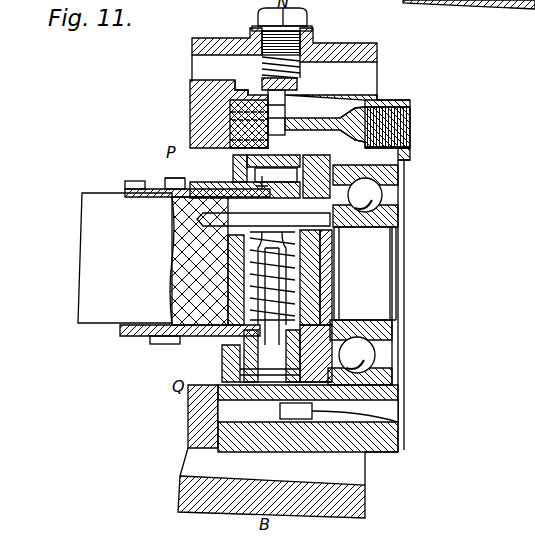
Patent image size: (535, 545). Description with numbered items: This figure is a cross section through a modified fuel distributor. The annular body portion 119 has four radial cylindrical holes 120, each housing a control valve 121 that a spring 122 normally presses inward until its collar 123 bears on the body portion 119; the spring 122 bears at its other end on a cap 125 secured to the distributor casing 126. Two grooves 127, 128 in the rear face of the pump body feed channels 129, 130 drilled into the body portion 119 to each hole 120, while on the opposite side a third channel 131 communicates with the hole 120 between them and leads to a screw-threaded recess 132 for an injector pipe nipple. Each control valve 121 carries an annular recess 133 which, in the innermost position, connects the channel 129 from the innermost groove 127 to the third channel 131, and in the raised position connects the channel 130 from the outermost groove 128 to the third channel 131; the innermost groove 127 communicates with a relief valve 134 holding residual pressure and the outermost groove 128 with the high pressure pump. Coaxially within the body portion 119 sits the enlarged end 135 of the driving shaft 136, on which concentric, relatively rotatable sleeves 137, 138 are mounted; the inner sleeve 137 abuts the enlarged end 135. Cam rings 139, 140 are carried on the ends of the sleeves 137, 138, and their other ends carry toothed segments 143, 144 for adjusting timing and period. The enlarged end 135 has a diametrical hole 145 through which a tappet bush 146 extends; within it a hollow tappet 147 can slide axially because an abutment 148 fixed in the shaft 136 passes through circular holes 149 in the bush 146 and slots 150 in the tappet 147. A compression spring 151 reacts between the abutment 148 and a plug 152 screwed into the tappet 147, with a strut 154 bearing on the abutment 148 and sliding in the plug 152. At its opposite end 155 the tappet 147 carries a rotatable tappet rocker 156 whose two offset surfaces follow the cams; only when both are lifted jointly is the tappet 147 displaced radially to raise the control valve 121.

The annular body portion 119 is at (402, 135).
The cylindrical hole 120 is at (410, 6).
The control valve 121 is at (252, 45).
The spring 122 is at (292, 62).
The collar 123 is at (286, 100).
The cap 125 is at (262, 16).
The distributor casing 126 is at (366, 500).
The groove 127 is at (232, 128).
The groove 128 is at (232, 102).
The channel 129 is at (232, 134).
The channel 130 is at (232, 92).
The third channel 131 is at (412, 165).
The screw-threaded recess 132 is at (410, 122).
The annular recess 133 is at (370, 101).
The relief valve 134 is at (398, 432).
The enlarged end 135 is at (345, 300).
The driving shaft 136 is at (100, 282).
The inner sleeve 137 is at (125, 190).
The outer sleeve 138 is at (165, 184).
The cam ring 139 is at (300, 190).
The cam ring 140 is at (240, 175).
The toothed segment 143 is at (135, 197).
The toothed segment 144 is at (165, 180).
The diametrical hole 145 is at (345, 345).
The tappet bush 146 is at (398, 310).
The tappet 147 is at (396, 335).
The abutment 148 is at (345, 235).
The circular hole 149 is at (370, 255).
The slot 150 is at (160, 338).
The compression spring 151 is at (176, 348).
The plug 152 is at (200, 408).
The strut 154 is at (263, 353).
The end of the tappet 155 is at (378, 182).
The tappet rocker 156 is at (392, 200).